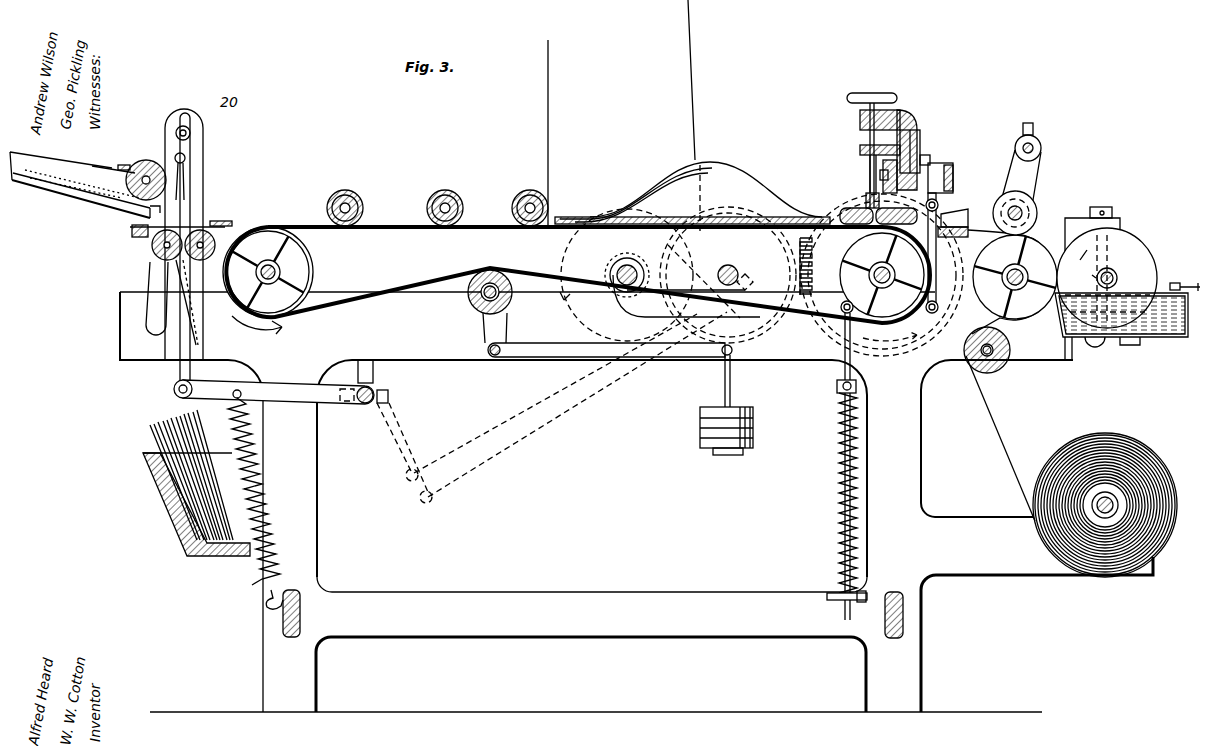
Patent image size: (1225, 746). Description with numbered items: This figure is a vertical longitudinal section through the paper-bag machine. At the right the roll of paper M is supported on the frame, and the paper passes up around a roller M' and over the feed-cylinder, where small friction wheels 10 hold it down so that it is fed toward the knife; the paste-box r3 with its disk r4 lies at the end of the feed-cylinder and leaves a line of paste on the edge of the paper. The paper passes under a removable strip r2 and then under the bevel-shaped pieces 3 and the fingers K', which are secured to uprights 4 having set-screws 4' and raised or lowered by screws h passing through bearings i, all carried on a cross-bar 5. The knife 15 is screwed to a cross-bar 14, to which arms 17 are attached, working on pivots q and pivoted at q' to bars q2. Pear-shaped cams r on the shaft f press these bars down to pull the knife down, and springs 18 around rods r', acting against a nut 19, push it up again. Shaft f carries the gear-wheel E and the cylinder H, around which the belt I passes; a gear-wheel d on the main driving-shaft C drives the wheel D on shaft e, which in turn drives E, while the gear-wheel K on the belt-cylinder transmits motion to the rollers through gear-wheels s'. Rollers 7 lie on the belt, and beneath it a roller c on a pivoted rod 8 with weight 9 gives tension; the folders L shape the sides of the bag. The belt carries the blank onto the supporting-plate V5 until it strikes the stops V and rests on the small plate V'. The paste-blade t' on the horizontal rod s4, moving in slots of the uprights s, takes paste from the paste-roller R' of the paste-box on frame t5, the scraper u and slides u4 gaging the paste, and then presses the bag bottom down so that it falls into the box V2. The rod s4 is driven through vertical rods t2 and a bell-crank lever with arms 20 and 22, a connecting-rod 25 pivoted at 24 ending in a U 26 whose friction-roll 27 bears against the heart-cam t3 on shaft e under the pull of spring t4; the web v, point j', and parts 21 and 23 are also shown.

The gear-wheel K is at (85, 185).
The frame t5 is at (80, 199).
The paste-roller R' is at (146, 169).
The slides u4 is at (124, 165).
The scraper u is at (104, 167).
The uprights s is at (193, 234).
The horizontal rod s4 is at (192, 133).
The paste-blade t' is at (201, 176).
The vertical rods t2 is at (191, 367).
The pivots q is at (178, 245).
The web strip v is at (202, 224).
The small plate V' is at (233, 212).
The supporting-plate V5 is at (228, 228).
The fingers K' is at (275, 272).
The gear-wheels s' is at (279, 272).
The belt I is at (578, 267).
The rollers 7 is at (437, 200).
The roller c is at (511, 288).
The pivoted rod 8 is at (610, 352).
The weight 9 is at (726, 405).
The main driving-shaft C is at (610, 270).
The gear-wheel d is at (629, 262).
The gear-wheel D is at (780, 340).
The heart-cam t3 is at (702, 282).
The shaft e is at (733, 265).
The U 26 is at (753, 273).
The friction-roll 27 is at (700, 317).
The gear-wheel E is at (817, 254).
The cylinder H is at (882, 275).
The shaft f is at (882, 262).
The bars q2 is at (886, 328).
The folders L is at (832, 215).
The bevel-shaped pieces 3 is at (847, 208).
The uprights 4 is at (877, 181).
The set-screws 4' is at (870, 181).
The screws h is at (872, 142).
The bearings i is at (858, 122).
The cross-bar 5 is at (918, 146).
The cross-bar 14 is at (936, 163).
The arms 17 is at (936, 256).
The pivots q' is at (946, 312).
The knife 15 is at (956, 227).
The removable strip r2 is at (969, 219).
The pear-shaped cams r is at (1015, 280).
The small wheels 10 is at (1036, 212).
The disk r4 is at (1145, 256).
The paste-box r3 is at (1190, 319).
The roller M' is at (991, 354).
The web j' is at (1000, 445).
The roll of paper M is at (1105, 499).
The rods r' is at (833, 466).
The shoulder or nut 19 is at (836, 392).
The springs 18 is at (838, 421).
The arm 20 is at (274, 391).
The block 21 is at (388, 396).
The post 23 is at (375, 374).
The arm 22 is at (396, 425).
The pivot 24 is at (418, 491).
The connecting-rod 25 is at (502, 434).
The spring t4 is at (240, 434).
The box V2 is at (213, 480).
The stops V is at (184, 475).